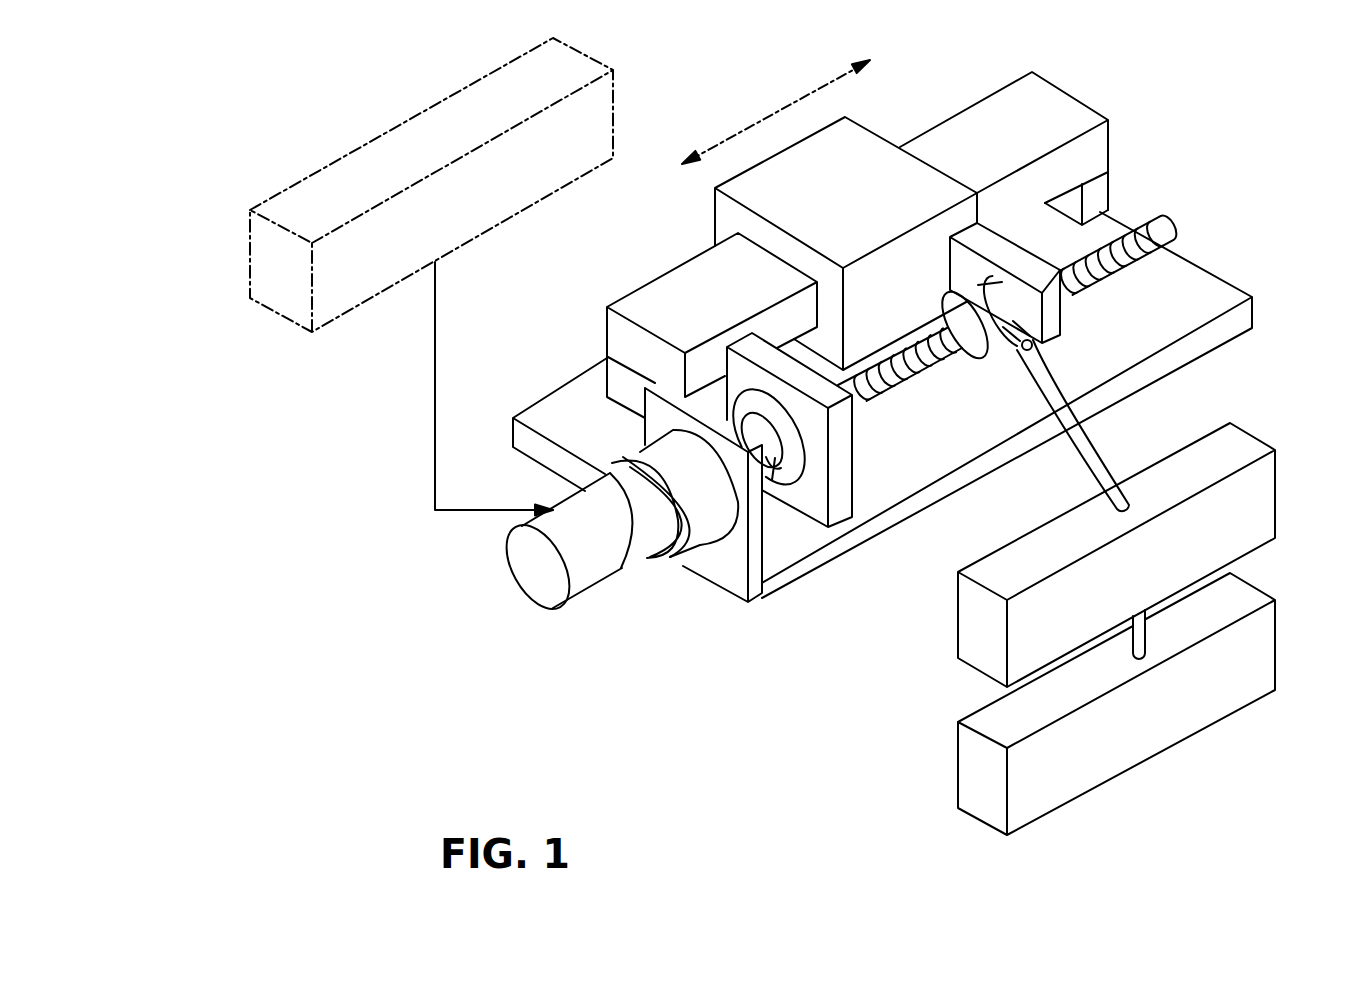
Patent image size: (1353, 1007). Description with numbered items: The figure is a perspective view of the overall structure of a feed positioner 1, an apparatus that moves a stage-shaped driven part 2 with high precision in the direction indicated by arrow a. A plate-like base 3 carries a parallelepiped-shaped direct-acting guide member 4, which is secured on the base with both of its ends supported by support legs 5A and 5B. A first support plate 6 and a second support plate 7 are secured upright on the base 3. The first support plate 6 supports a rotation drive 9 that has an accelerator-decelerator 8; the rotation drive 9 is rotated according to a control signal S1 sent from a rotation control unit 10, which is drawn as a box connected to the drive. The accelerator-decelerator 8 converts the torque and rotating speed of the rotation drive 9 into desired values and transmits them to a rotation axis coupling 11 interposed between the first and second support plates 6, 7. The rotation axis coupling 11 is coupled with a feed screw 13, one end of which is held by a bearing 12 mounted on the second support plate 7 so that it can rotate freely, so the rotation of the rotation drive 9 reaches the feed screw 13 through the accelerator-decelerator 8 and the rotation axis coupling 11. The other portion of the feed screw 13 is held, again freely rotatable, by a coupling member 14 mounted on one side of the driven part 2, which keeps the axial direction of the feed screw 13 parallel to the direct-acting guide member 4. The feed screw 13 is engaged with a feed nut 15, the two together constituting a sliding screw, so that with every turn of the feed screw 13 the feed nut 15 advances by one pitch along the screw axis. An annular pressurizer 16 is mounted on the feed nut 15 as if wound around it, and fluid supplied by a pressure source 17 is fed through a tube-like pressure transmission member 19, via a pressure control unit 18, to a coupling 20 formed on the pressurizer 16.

The feed positioner 1 is at (118, 78).
The driven part 2 is at (870, 126).
The base 3 is at (1235, 283).
The direct-acting guide member 4 is at (978, 148).
The support leg 5A is at (607, 362).
The support leg 5B is at (1110, 178).
The first support plate 6 is at (757, 592).
The second support plate 7 is at (857, 427).
The accelerator-decelerator 8 is at (713, 513).
The rotation drive 9 is at (617, 533).
The rotation control unit 10 is at (420, 112).
The rotation axis coupling 11 is at (775, 470).
The bearing 12 is at (798, 440).
The feed screw 13 is at (1163, 220).
The coupling member 14 is at (1068, 306).
The feed nut 15 is at (985, 355).
The annular pressurizer 16 is at (1030, 318).
The pressure source 17 is at (1277, 642).
The pressure control unit 18 is at (1277, 493).
The pressure transmission member 19 is at (1100, 450).
The coupling 20 is at (1021, 350).
The arrow a is at (777, 110).
The control signal S1 is at (435, 392).